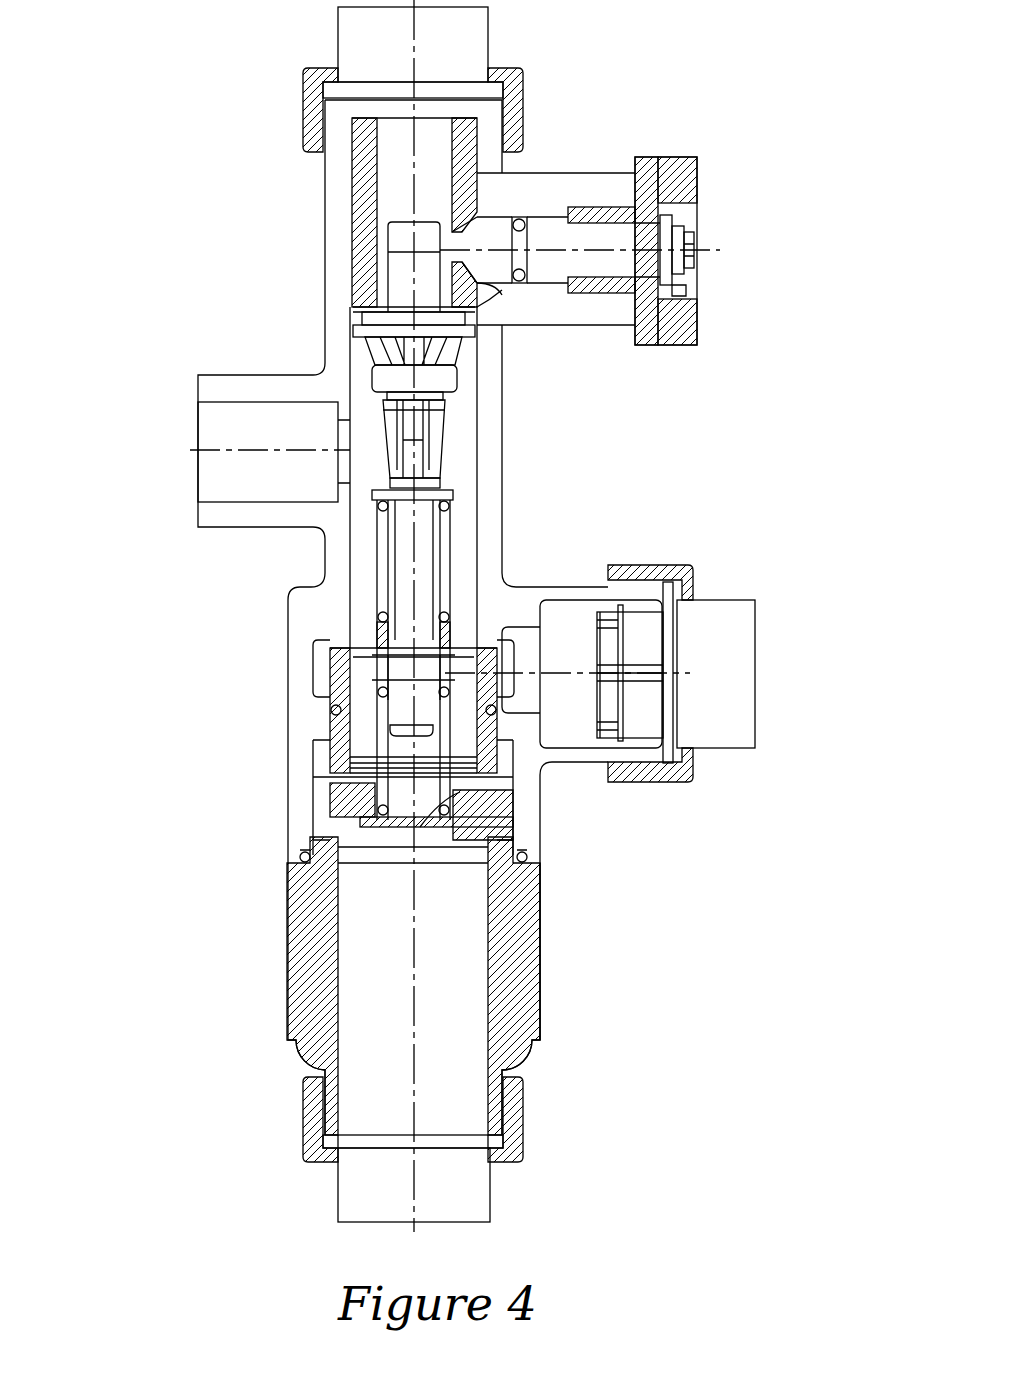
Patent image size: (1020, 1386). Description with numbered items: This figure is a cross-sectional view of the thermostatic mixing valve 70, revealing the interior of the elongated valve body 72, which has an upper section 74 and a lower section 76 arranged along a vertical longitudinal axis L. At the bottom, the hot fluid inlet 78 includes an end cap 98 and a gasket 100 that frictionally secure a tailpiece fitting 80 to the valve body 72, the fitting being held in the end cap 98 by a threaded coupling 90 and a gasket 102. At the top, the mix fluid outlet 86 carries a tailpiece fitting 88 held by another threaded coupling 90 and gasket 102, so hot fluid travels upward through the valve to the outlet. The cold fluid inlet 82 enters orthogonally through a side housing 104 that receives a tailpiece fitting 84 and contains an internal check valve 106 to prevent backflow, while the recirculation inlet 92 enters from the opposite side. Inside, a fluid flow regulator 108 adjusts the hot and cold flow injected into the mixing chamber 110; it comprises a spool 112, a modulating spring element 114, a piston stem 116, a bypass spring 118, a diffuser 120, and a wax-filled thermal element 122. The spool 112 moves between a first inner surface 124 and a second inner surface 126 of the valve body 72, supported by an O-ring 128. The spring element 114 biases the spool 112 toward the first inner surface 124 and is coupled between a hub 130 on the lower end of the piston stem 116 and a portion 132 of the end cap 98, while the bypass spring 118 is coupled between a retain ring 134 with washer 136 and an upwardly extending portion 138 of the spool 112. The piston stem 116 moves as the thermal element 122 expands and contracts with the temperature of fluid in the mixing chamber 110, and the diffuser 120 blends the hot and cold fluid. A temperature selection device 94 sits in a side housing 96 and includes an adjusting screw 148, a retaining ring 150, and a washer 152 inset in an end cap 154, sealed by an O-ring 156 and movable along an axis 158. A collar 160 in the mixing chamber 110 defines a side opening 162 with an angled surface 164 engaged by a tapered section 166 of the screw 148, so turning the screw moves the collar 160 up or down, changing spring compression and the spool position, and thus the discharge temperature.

The thermostatic mixing valve 70 is at (708, 62).
The valve body 72 is at (490, 394).
The upper section 74 is at (212, 138).
The lower section 76 is at (230, 986).
The hot fluid inlet 78 is at (586, 1022).
The tailpiece fitting 80 is at (478, 1205).
The cold fluid inlet 82 is at (712, 580).
The tailpiece fitting 84 is at (746, 704).
The mix fluid outlet 86 is at (532, 98).
The tailpiece fitting 88 is at (352, 33).
The threaded coupling 90 is at (318, 96).
The recirculation inlet 92 is at (180, 423).
The temperature selection device 94 is at (737, 182).
The side housing 96 is at (518, 188).
The end cap 98 is at (532, 960).
The gasket 100 is at (302, 857).
The gasket 102 is at (484, 88).
The side housing 104 is at (560, 602).
The check valve 106 is at (628, 640).
The fluid flow regulator 108 is at (460, 530).
The mixing chamber 110 is at (458, 432).
The spool 112 is at (350, 757).
The modulating spring element 114 is at (392, 735).
The piston stem 116 is at (400, 585).
The bypass spring 118 is at (383, 551).
The diffuser 120 is at (380, 352).
The thermal element 122 is at (392, 258).
The first inner surface 124 is at (332, 646).
The second inner surface 126 is at (348, 790).
The O-ring 128 is at (333, 710).
The hub 130 is at (400, 665).
The portion of the end cap 132 is at (500, 812).
The retain ring 134 is at (454, 482).
The washer 136 is at (450, 497).
The upwardly extending portion 138 is at (392, 625).
The adjusting screw 148 is at (680, 246).
The retaining ring 150 is at (686, 275).
The washer 152 is at (688, 298).
The end cap 154 is at (655, 162).
The O-ring 156 is at (519, 222).
The axis 158 is at (672, 226).
The collar 160 is at (364, 190).
The side opening 162 is at (492, 150).
The angled surface 164 is at (490, 280).
The tapered section 166 is at (482, 284).
The longitudinal axis L is at (396, 208).